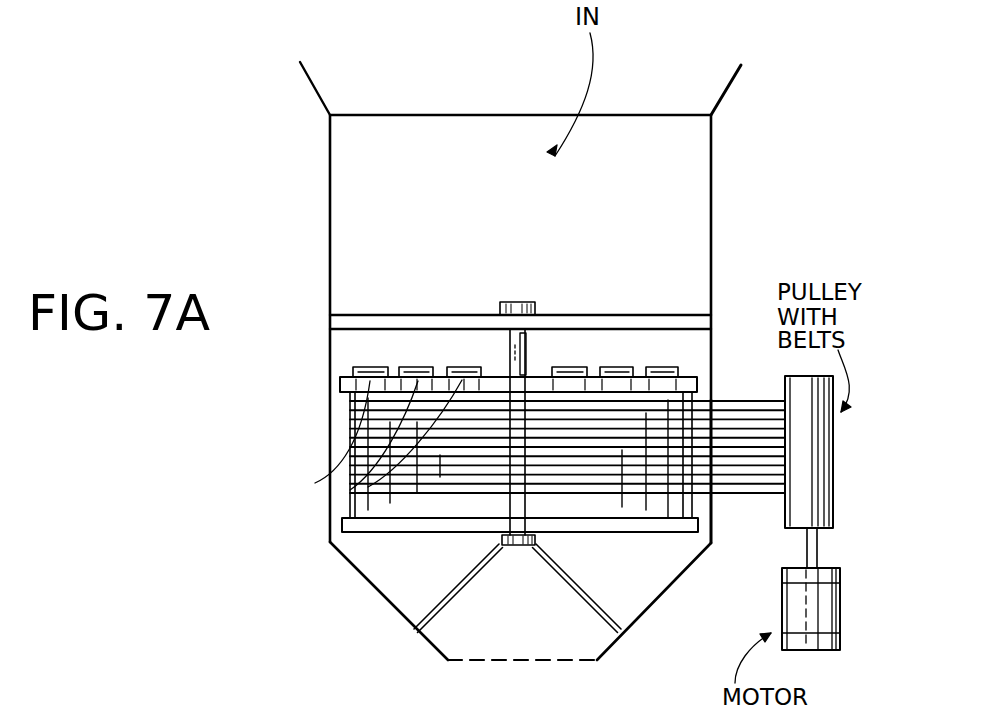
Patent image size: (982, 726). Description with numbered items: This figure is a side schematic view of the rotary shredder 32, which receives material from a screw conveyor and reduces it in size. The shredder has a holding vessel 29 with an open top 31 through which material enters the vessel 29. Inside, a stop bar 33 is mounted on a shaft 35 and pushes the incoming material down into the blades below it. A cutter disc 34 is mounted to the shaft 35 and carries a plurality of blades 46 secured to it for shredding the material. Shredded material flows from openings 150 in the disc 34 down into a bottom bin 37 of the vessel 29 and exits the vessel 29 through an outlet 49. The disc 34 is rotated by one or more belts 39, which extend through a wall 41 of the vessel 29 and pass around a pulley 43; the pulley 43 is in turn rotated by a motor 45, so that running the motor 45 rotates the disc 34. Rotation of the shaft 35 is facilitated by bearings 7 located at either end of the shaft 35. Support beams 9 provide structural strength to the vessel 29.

The bearings 7 is at (507, 302).
The support beams 9 is at (427, 609).
The holding vessel 29 is at (328, 250).
The open top 31 is at (320, 95).
The rotary shredder 32 is at (519, 432).
The stop bar 33 is at (680, 315).
The cutter disc 34 is at (340, 387).
The shaft 35 is at (528, 353).
The bottom bin 37 is at (357, 572).
The belts 39 is at (733, 493).
The wall 41 is at (713, 518).
The pulley 43 is at (812, 512).
The motor 45 is at (823, 618).
The blades 46 is at (375, 358).
The outlet 49 is at (595, 662).
The openings 150 is at (350, 490).